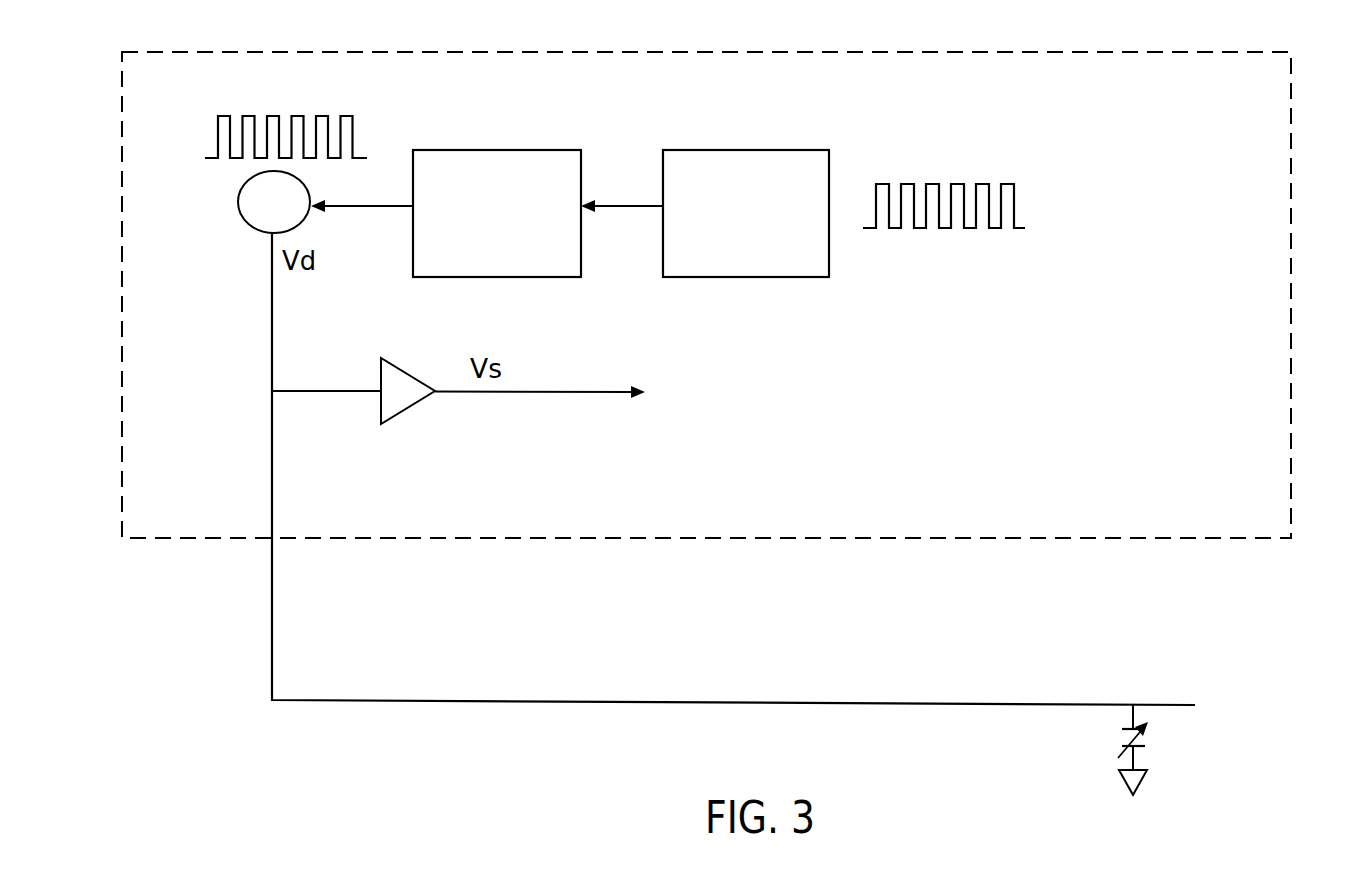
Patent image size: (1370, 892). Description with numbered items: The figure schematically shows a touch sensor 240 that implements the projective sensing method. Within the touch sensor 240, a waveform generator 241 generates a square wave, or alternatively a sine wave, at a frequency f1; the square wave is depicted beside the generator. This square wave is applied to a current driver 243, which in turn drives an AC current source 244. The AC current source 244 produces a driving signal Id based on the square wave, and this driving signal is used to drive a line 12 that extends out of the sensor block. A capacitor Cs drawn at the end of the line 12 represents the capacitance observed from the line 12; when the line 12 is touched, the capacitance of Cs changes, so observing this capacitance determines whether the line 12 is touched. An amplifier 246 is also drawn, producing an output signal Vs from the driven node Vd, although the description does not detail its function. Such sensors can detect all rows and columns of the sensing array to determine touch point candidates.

The touch sensor 240 is at (1291, 320).
The waveform generator 241 is at (683, 150).
The current driver 243 is at (460, 132).
The AC current source 244 is at (238, 199).
The amplifier 246 is at (393, 365).
The line 12 is at (1120, 703).